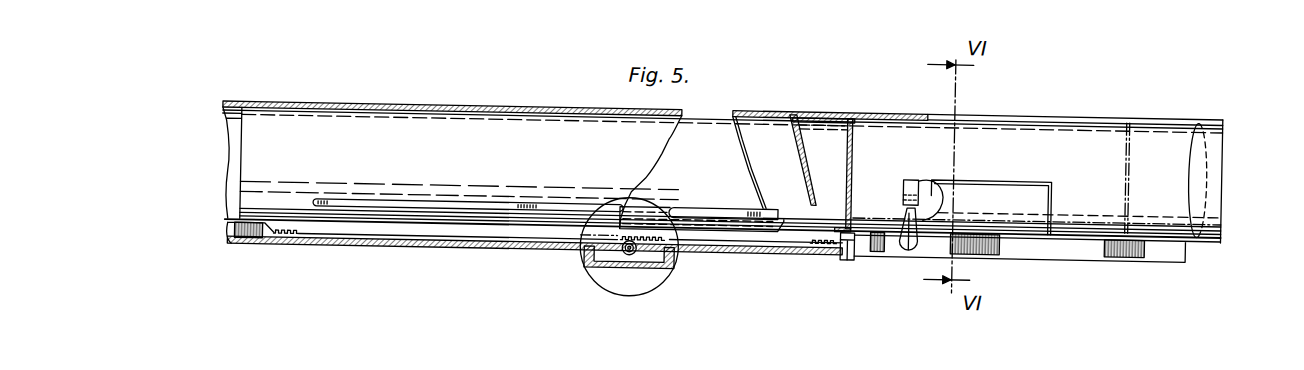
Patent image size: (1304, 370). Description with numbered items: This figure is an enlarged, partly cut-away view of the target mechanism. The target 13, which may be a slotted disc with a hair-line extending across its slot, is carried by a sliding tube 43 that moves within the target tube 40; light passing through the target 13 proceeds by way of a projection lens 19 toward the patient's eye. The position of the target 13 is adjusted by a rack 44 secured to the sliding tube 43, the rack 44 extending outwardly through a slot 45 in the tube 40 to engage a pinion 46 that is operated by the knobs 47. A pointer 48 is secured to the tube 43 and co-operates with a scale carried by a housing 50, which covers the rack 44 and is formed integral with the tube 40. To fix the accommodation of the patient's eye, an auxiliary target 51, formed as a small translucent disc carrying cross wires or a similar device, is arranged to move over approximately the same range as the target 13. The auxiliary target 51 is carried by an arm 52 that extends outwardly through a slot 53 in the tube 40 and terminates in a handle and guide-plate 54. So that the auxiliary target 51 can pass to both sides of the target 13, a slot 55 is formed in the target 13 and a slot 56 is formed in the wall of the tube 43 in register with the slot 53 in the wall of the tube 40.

The target 13 is at (860, 164).
The projection lens 19 is at (1208, 159).
The target tube 40 is at (528, 95).
The sliding tube 43 is at (828, 101).
The rack 44 is at (790, 222).
The slot 45 is at (873, 240).
The pinion 46 is at (633, 248).
The knobs 47 is at (603, 266).
The pointer 48 is at (848, 250).
The housing 50 is at (330, 245).
The auxiliary target 51 is at (906, 169).
The arm 52 is at (906, 188).
The slot 53 is at (695, 206).
The handle and guide-plate 54 is at (912, 230).
The slot 55 is at (850, 179).
The slot 56 is at (436, 199).